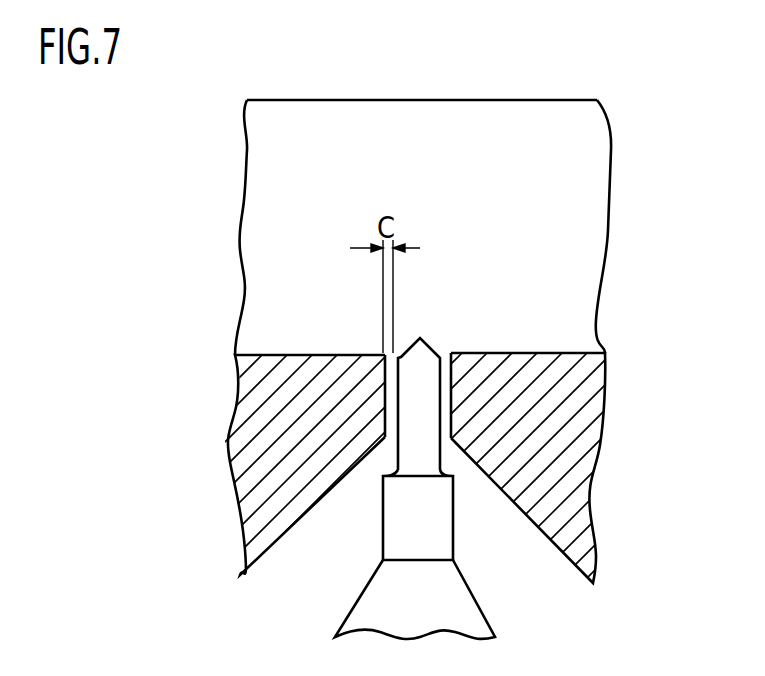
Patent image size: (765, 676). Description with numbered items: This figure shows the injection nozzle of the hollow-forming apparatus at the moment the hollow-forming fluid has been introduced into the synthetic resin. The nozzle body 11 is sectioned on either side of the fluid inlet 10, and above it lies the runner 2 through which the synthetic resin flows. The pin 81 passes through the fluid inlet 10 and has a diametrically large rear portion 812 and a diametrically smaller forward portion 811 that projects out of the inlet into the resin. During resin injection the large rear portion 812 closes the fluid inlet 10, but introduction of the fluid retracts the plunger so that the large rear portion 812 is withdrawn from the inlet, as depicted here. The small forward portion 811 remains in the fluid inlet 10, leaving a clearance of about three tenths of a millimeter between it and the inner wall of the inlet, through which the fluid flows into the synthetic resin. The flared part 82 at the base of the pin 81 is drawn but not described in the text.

The housing body 2 is at (572, 165).
The through hole 10 is at (452, 413).
The hole wall section 11 is at (558, 420).
The pin 81 is at (392, 444).
The pin shaft 811 is at (412, 412).
The pin base body 812 is at (407, 513).
The flared skirt 82 is at (447, 600).